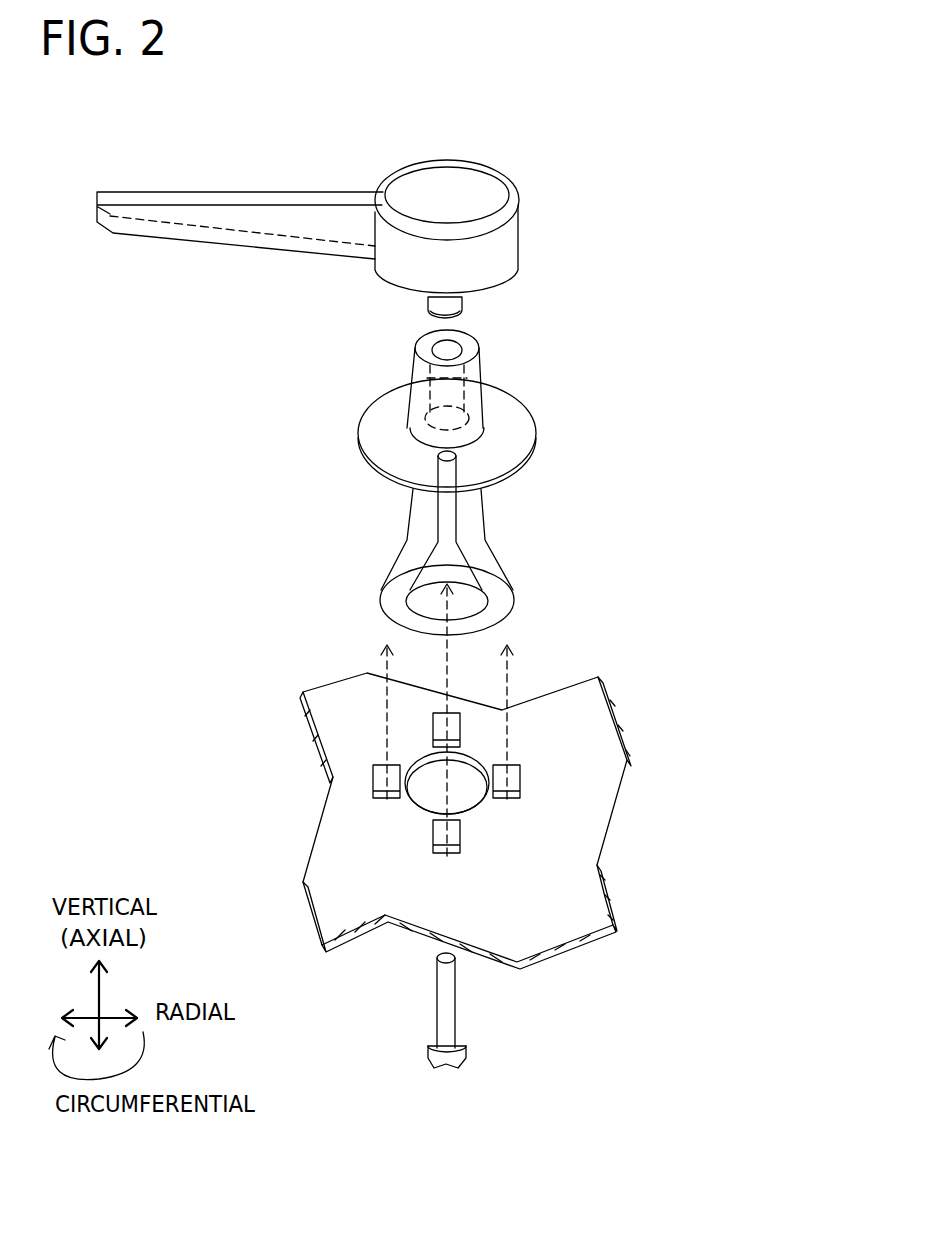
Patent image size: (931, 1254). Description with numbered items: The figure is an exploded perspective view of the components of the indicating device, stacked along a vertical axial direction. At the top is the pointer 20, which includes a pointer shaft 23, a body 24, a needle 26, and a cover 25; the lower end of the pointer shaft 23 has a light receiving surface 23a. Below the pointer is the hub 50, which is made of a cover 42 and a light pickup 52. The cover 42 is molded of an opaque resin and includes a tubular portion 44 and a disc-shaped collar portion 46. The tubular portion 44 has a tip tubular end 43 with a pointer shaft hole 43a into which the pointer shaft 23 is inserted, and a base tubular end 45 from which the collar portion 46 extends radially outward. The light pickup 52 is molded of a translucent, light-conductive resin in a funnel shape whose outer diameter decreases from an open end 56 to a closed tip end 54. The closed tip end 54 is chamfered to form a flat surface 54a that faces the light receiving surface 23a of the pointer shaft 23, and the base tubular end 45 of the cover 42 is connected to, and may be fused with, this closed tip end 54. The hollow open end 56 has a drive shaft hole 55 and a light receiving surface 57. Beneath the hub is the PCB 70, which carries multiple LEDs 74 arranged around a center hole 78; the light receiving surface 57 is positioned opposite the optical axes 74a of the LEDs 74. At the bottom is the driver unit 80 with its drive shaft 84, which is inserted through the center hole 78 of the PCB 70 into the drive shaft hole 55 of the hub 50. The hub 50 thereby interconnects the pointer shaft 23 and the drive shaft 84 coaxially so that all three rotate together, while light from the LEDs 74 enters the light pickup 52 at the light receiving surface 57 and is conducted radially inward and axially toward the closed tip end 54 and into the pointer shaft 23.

The pointer 20 is at (656, 227).
The pointer shaft 23 is at (464, 297).
The light receiving surface 23a is at (468, 317).
The body 24 is at (527, 226).
The cover 25 is at (508, 177).
The needle 26 is at (250, 191).
The cover 42 is at (551, 410).
The tip tubular end 43 is at (415, 356).
The pointer shaft hole 43a is at (470, 348).
The tubular portion 44 is at (420, 385).
The base tubular end 45 is at (414, 418).
The collar portion 46 is at (360, 430).
The hub 50 is at (660, 451).
The light pickup 52 is at (534, 528).
The closed tip end 54 is at (430, 445).
The flat surface 54a is at (420, 440).
The drive shaft hole 55 is at (448, 515).
The open end 56 is at (392, 574).
The light receiving surface 57 is at (383, 596).
The PCB 70 is at (686, 803).
The LEDs 74 is at (461, 730).
The optical axes 74a is at (515, 658).
The center hole 78 is at (490, 762).
The driver unit 80 is at (681, 1031).
The drive shaft 84 is at (457, 1000).